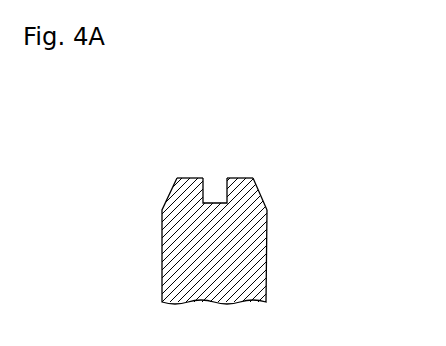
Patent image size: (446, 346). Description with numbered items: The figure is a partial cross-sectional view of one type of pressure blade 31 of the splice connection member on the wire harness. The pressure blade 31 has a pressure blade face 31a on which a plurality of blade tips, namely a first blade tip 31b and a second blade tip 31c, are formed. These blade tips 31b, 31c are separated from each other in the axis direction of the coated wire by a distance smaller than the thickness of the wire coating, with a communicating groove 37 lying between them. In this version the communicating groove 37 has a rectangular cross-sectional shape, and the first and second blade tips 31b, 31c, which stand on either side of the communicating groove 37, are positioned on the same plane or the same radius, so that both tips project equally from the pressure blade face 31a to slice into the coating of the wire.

The pressure blade 31 is at (263, 202).
The pressure blade face 31a is at (254, 178).
The first blade tip 31b is at (190, 178).
The second blade tip 31c is at (238, 178).
The communicating groove 37 is at (212, 200).